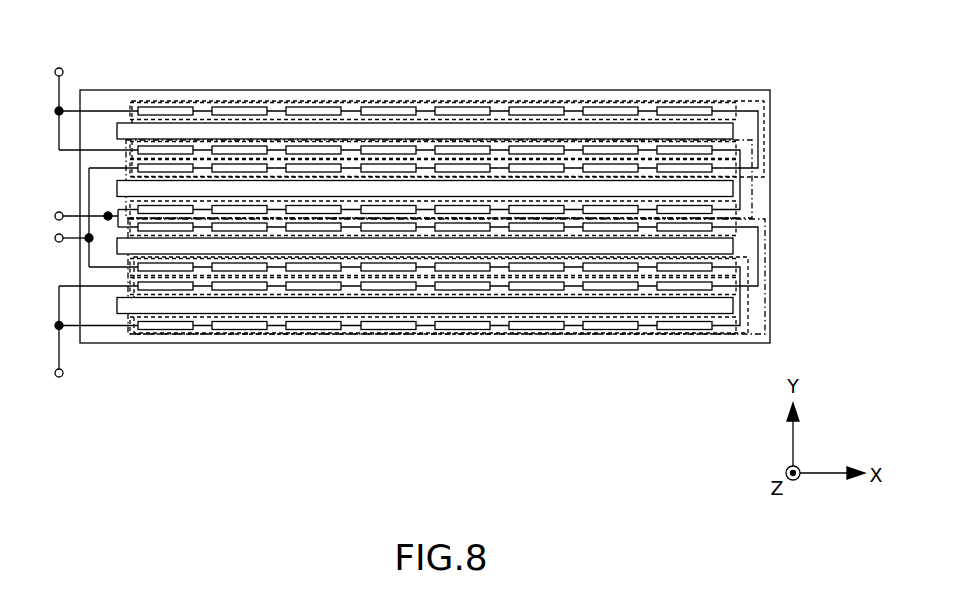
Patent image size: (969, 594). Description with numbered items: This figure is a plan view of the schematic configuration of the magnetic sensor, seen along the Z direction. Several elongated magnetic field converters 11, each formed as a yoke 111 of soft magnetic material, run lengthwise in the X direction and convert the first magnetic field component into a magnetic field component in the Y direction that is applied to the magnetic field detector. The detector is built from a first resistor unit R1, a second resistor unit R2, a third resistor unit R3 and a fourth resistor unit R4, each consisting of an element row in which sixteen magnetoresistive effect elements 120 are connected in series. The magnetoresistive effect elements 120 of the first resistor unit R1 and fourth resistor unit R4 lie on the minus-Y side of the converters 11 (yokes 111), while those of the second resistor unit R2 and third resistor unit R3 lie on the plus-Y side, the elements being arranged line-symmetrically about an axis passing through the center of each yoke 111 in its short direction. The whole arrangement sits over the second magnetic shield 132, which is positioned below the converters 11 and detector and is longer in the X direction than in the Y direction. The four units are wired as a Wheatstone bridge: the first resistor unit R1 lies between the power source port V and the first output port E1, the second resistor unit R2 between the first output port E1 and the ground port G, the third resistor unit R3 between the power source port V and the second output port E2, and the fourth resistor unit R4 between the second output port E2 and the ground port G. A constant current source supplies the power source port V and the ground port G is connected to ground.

The magnetic field converter 11 is at (514, 226).
The yoke 111 is at (562, 190).
The magnetoresistive effect element 120 is at (312, 152).
The second magnetic shield 132 is at (770, 318).
The first resistor unit R1 is at (752, 190).
The second resistor unit R2 is at (765, 248).
The third resistor unit R3 is at (745, 101).
The fourth resistor unit R4 is at (645, 335).
The power source port V is at (92, 95).
The ground port G is at (91, 345).
The first output port E1 is at (79, 214).
The second output port E2 is at (79, 217).